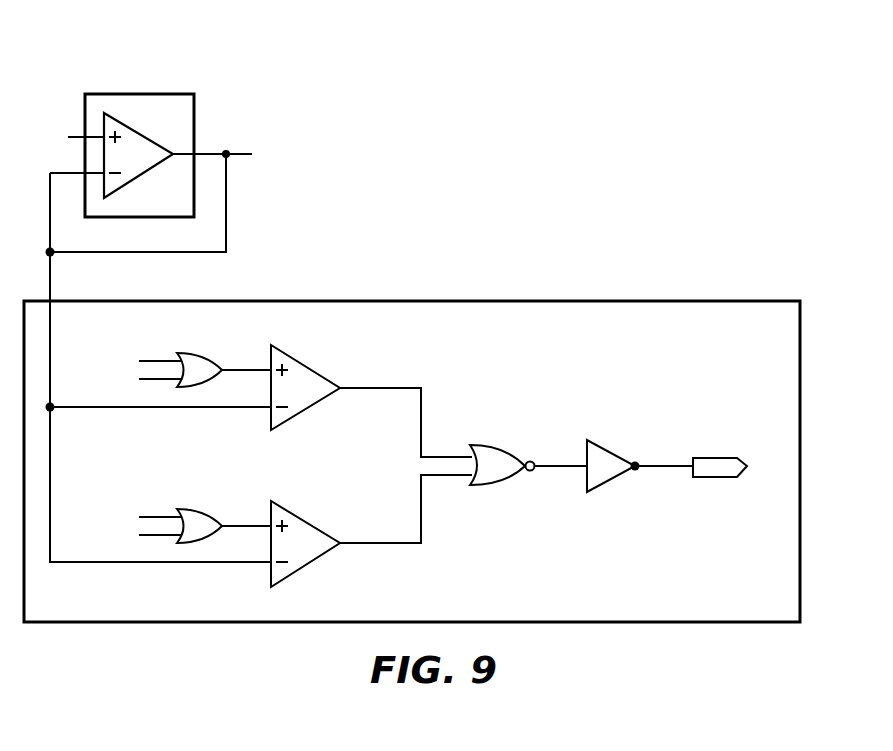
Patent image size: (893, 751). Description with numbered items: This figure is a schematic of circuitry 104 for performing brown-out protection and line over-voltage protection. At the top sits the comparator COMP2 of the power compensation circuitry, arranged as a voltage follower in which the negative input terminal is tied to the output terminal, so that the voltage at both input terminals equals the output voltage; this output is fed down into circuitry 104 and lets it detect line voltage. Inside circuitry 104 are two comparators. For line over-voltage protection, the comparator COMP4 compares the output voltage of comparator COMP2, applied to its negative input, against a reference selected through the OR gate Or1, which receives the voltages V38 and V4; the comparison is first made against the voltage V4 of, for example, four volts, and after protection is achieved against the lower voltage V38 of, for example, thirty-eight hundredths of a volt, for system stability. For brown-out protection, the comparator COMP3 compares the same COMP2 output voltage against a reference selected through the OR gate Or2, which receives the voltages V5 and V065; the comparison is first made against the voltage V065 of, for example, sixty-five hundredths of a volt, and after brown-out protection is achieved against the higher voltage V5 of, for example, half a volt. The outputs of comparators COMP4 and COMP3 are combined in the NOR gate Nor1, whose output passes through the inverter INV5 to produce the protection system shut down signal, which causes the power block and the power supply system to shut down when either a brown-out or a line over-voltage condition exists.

The circuitry 104 is at (412, 485).
The comparator COMP2 is at (149, 136).
The comparator COMP4 is at (371, 401).
The comparator COMP3 is at (371, 531).
The OR gate Or1 is at (204, 356).
The OR gate Or2 is at (204, 512).
The NOR gate Nor1 is at (528, 451).
The inverter INV5 is at (636, 453).
The reference voltage V38 is at (130, 346).
The reference voltage V4 is at (160, 393).
The reference voltage V5 is at (133, 502).
The reference voltage V065 is at (126, 548).